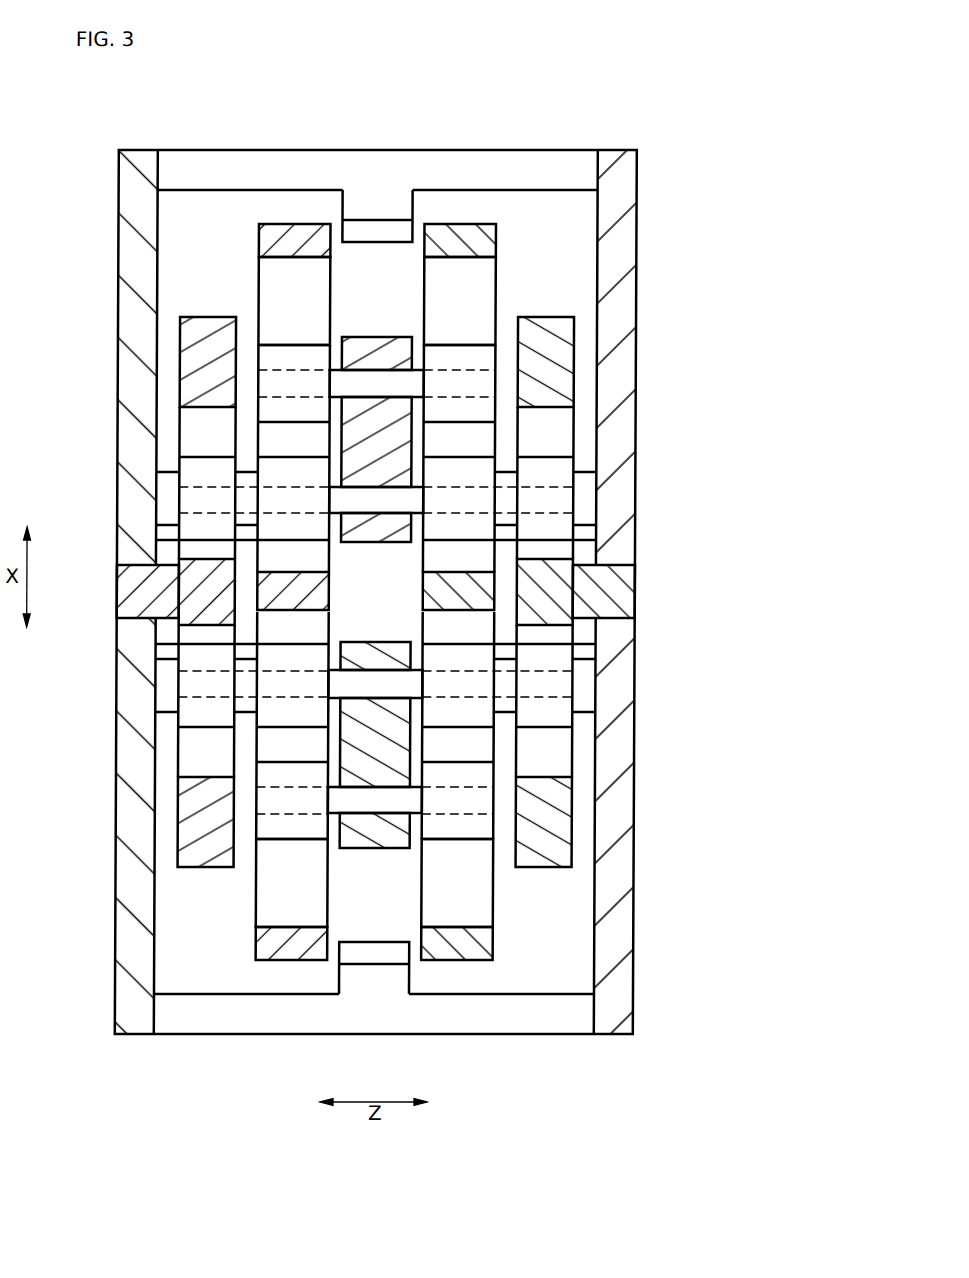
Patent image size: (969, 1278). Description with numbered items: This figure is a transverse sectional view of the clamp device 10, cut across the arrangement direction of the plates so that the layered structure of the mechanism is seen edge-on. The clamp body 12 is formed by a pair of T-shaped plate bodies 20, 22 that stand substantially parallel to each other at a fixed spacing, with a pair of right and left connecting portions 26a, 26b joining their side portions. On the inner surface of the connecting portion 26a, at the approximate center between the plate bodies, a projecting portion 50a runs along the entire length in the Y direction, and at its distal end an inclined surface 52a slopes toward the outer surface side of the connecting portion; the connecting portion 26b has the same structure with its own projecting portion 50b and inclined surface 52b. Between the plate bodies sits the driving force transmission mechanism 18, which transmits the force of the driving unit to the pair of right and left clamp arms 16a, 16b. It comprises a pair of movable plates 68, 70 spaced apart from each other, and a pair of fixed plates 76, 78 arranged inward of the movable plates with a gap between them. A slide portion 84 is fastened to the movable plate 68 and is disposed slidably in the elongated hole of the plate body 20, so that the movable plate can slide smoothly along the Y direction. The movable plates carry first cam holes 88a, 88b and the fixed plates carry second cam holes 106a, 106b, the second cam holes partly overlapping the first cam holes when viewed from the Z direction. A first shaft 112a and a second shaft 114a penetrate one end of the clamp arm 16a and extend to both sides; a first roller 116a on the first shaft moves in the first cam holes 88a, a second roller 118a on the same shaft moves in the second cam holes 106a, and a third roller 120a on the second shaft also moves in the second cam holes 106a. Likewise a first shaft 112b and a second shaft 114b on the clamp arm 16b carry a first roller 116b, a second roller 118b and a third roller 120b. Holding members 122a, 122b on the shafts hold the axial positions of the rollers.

The clamp device 10 is at (265, 79).
The clamp body 12 is at (615, 125).
The clamp arm 16a is at (380, 657).
The clamp arm 16b is at (379, 531).
The driving force transmission mechanism 18 is at (574, 267).
The plate body 20 is at (131, 1003).
The plate body 22 is at (620, 1003).
The connecting portion 26a is at (473, 1020).
The connecting portion 26b is at (472, 168).
The projecting portion 50a is at (373, 975).
The projecting portion 50b is at (379, 215).
The inclined surface 52a is at (377, 953).
The inclined surface 52b is at (379, 236).
The movable plate 68 is at (213, 332).
The movable plate 70 is at (543, 332).
The fixed plate 76 is at (284, 235).
The fixed plate 78 is at (442, 238).
The slide portion 84 is at (131, 591).
The first cam hole 88a is at (195, 748).
The first cam hole 88b is at (195, 435).
The second cam hole 106a is at (282, 908).
The second cam hole 106b is at (285, 276).
The first shaft 112a is at (388, 686).
The first shaft 112b is at (388, 500).
The second shaft 114a is at (377, 800).
The second shaft 114b is at (376, 386).
The first roller 116a is at (198, 716).
The first roller 116b is at (198, 466).
The second roller 118a is at (252, 648).
The second roller 118b is at (252, 536).
The third roller 120a is at (292, 832).
The third roller 120b is at (292, 358).
The holding member 122a is at (254, 706).
The holding member 122b is at (254, 479).